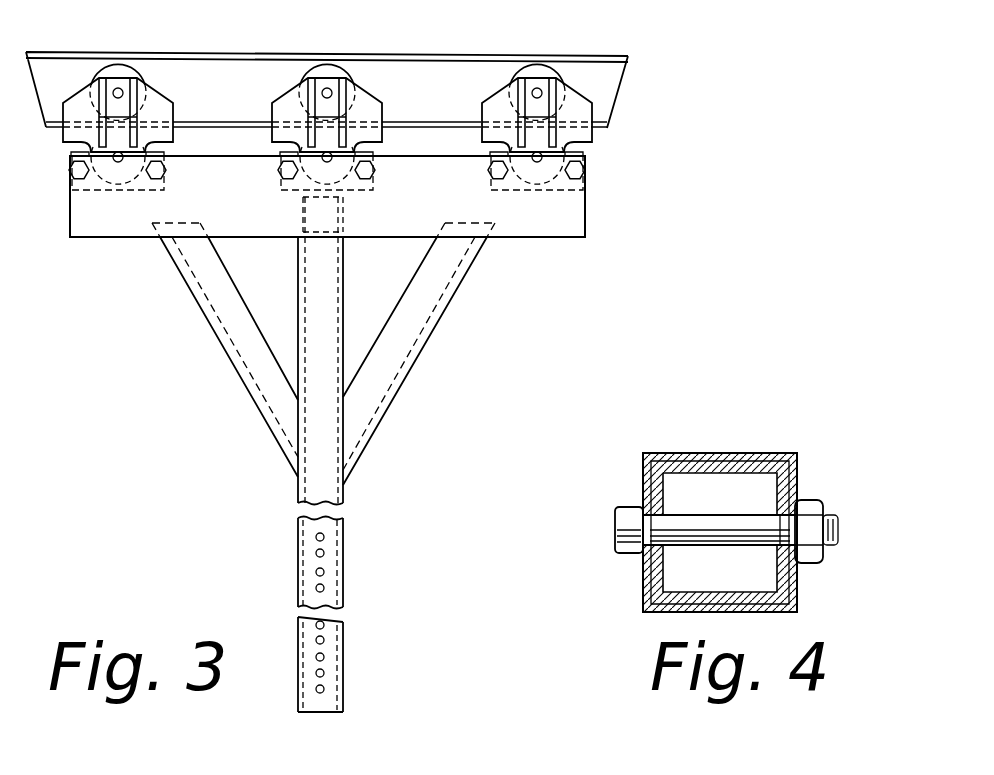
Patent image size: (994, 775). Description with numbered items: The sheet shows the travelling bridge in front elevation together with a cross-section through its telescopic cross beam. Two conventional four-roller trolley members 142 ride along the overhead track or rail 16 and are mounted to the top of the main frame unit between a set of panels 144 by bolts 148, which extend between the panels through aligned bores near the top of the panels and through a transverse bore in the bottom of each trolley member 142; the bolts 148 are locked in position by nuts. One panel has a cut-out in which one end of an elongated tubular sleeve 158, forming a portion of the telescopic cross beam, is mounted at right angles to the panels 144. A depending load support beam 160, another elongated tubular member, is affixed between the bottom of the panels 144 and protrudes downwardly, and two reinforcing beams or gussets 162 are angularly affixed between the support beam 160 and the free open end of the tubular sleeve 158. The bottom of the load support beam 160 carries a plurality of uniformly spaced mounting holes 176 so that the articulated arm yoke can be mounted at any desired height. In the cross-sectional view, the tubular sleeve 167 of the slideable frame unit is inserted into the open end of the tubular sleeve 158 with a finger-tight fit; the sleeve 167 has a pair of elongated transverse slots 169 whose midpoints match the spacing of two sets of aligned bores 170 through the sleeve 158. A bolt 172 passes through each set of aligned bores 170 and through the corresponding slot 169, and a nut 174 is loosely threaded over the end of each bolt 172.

In FIG. 3, the overhead track or rail 16 is at (262, 85).
In FIG. 3, the four-roller trolley member 142 is at (167, 100).
In FIG. 3, the panel 144 is at (565, 213).
In FIG. 3, the bolt 148 is at (582, 168).
In FIG. 3, the tubular sleeve 158 is at (347, 214).
In FIG. 4, the tubular sleeve 158 is at (780, 460).
In FIG. 3, the load support beam 160 is at (307, 523).
In FIG. 3, the reinforcing beam or gusset 162 is at (240, 353).
In FIG. 3, the mounting hole 176 is at (325, 572).
In FIG. 4, the slideable frame unit tubular sleeve 167 is at (713, 470).
In FIG. 4, the elongated transverse slot 169 is at (665, 522).
In FIG. 4, the aligned bore 170 is at (641, 517).
In FIG. 4, the bolt 172 is at (630, 548).
In FIG. 4, the nut 174 is at (813, 502).